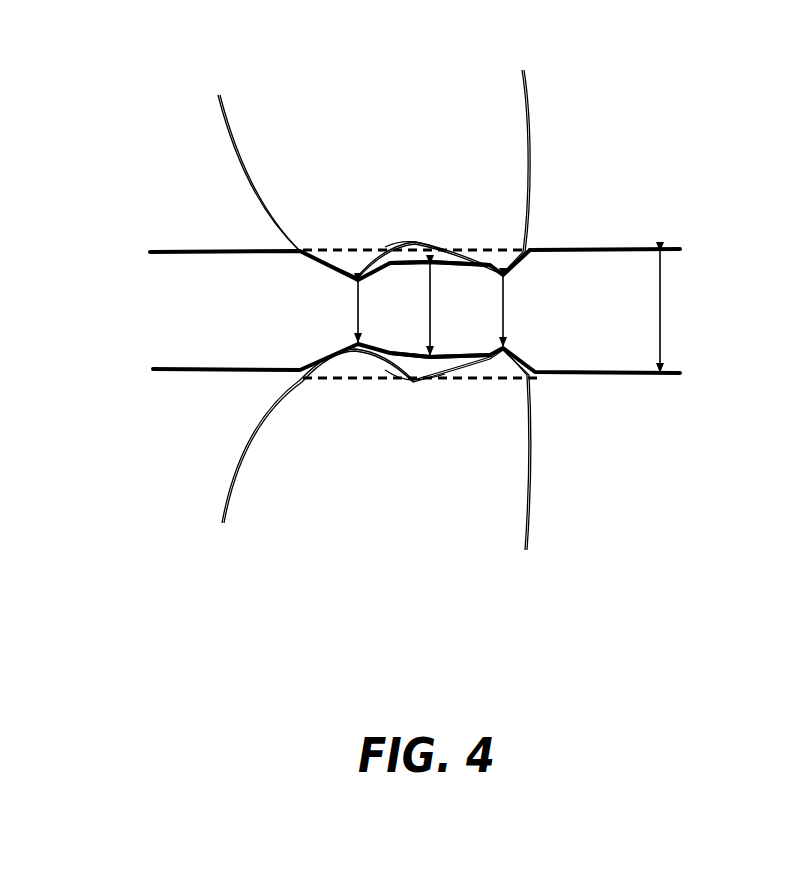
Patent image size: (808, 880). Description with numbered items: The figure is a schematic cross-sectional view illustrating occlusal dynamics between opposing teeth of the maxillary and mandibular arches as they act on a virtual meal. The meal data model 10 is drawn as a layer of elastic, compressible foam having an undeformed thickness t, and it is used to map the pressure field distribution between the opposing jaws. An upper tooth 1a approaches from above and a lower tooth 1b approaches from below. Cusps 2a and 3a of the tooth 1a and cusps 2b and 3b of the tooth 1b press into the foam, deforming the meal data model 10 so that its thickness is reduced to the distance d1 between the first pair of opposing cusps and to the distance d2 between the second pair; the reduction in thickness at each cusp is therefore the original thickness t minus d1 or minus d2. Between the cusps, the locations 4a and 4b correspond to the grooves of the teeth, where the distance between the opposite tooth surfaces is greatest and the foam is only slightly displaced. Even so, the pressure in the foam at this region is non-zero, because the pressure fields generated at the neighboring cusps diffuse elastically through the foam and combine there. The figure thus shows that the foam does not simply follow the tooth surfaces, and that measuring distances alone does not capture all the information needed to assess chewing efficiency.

The meal data model 10 is at (459, 264).
The tooth 1a is at (485, 132).
The tooth 1b is at (480, 478).
The cusp 2a is at (327, 280).
The cusp 2b is at (340, 342).
The cusp 3a is at (515, 273).
The cusp 3b is at (510, 342).
The location 4a is at (403, 243).
The location 4b is at (400, 388).
The distance d1 is at (337, 312).
The distance d2 is at (530, 311).
The thickness t is at (662, 317).